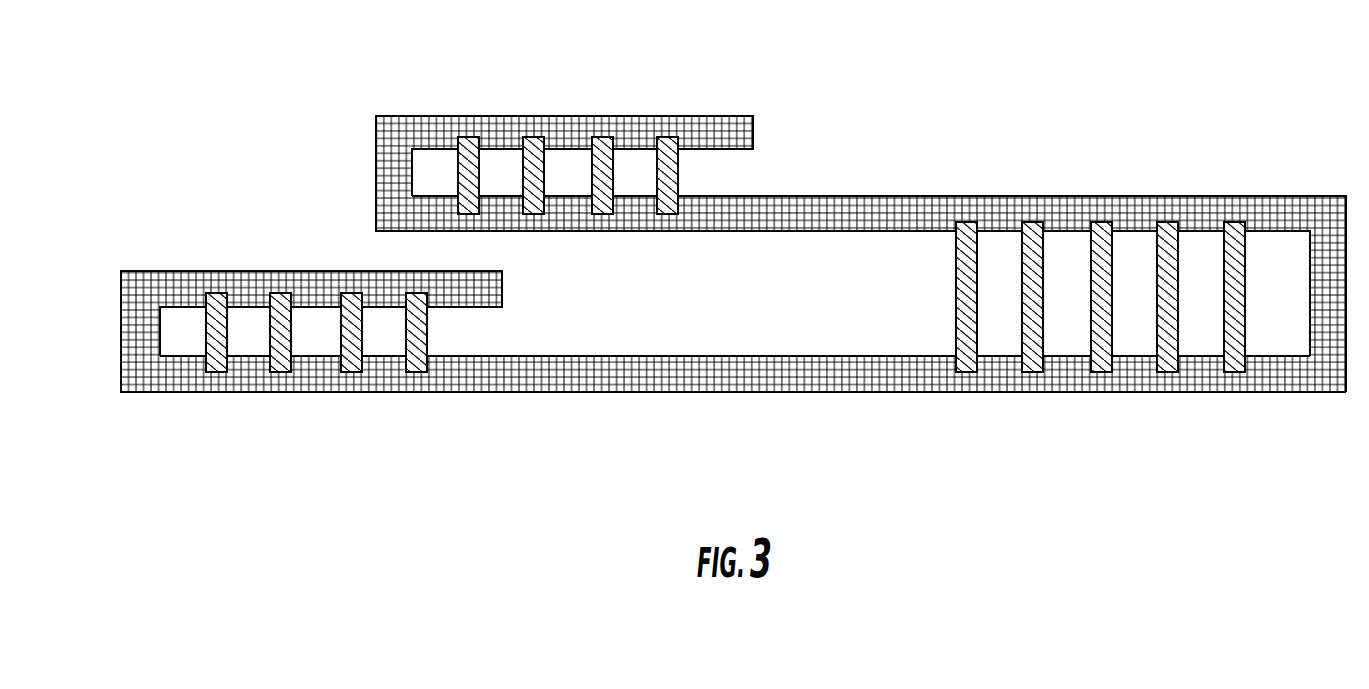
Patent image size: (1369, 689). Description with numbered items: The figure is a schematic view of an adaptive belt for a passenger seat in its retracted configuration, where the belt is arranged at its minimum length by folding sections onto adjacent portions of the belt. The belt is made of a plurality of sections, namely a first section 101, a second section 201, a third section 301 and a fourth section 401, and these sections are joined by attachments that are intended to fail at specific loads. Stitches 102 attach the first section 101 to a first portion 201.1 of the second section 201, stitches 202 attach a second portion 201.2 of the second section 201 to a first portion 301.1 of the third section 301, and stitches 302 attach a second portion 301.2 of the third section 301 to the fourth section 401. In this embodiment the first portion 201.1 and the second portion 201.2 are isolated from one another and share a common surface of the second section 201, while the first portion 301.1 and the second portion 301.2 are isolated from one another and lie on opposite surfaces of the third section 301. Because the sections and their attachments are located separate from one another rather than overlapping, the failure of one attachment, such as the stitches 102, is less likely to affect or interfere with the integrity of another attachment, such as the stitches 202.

The first section 101 is at (248, 288).
The stitches 102 is at (352, 368).
The second section 201 is at (587, 373).
The first portion of the second section 201.1 is at (473, 355).
The second portion of the second section 201.2 is at (903, 357).
The stitches 202 is at (1102, 370).
The third section 301 is at (639, 215).
The first portion of the third section 301.1 is at (932, 232).
The second portion of the third section 301.2 is at (743, 197).
The stitches 302 is at (603, 138).
The fourth section 401 is at (717, 135).